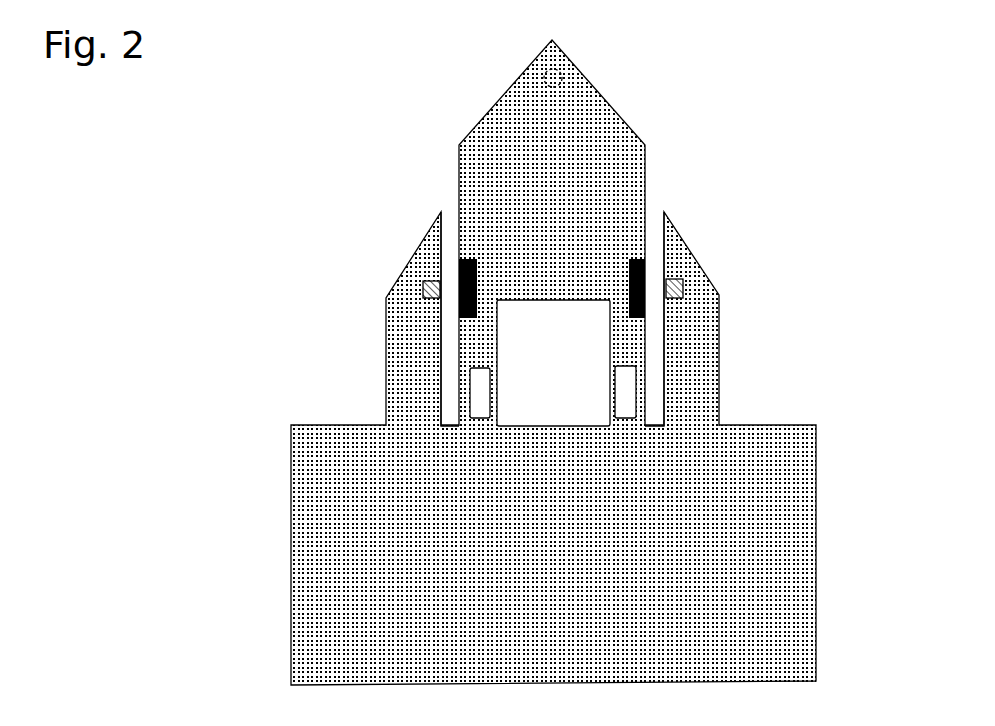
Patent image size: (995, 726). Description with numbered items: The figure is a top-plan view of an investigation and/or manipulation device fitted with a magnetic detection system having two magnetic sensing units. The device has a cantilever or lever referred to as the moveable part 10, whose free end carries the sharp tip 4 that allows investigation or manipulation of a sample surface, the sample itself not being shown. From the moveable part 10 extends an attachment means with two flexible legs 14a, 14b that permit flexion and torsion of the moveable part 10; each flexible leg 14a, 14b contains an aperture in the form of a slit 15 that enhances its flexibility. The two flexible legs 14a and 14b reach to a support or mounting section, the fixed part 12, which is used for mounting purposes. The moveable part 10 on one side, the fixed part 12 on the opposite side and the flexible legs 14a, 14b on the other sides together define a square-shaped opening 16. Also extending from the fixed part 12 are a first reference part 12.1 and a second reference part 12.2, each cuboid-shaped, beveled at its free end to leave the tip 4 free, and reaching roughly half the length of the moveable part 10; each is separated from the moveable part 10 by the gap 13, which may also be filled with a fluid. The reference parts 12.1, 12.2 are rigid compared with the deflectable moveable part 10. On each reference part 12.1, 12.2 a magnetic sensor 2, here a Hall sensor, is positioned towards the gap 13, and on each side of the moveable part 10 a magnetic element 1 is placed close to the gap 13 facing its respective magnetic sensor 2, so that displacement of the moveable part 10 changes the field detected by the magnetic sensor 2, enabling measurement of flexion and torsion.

The magnetic element 1 is at (482, 273).
The magnetic sensor 2 is at (423, 290).
The sharp tip 4 is at (561, 75).
The moveable part 10 is at (567, 192).
The fixed part 12 is at (323, 572).
The first reference part 12.1 is at (716, 394).
The second reference part 12.2 is at (433, 400).
The gap 13 is at (450, 213).
The flexible leg 14a is at (625, 340).
The flexible leg 14b is at (475, 342).
The slit 15 is at (481, 413).
The square-shaped opening 16 is at (569, 371).